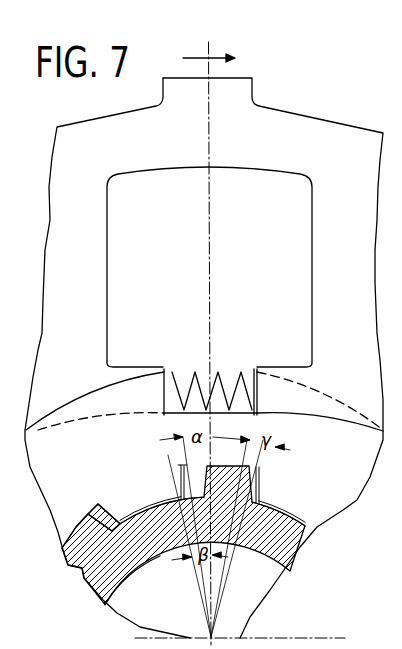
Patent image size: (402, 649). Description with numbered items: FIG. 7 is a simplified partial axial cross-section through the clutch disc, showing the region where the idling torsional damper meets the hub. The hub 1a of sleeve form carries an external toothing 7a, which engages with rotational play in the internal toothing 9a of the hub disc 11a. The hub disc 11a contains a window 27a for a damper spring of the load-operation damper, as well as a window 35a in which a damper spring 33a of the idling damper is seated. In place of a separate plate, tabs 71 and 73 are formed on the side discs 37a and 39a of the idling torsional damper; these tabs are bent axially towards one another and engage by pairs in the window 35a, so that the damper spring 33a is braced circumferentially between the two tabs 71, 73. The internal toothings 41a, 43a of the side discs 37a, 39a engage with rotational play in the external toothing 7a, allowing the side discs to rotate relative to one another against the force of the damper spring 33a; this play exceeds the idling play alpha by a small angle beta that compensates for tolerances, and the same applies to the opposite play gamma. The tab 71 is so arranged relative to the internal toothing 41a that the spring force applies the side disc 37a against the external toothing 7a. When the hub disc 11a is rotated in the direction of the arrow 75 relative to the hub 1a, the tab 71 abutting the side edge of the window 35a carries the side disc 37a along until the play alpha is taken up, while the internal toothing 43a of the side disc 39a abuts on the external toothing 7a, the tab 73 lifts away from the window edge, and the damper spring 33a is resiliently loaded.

The arrow 75 is at (186, 57).
The hub disc 11a is at (320, 130).
The window 27a is at (313, 232).
The damper spring 33a is at (220, 372).
The tab 71 is at (171, 372).
The tab 73 is at (246, 372).
The side disc 37a is at (116, 393).
The side disc 39a is at (315, 388).
The window 35a is at (175, 416).
The hub 1a is at (293, 541).
The external toothing 7a is at (70, 534).
The internal toothing 9a is at (179, 466).
The internal toothing 41a is at (181, 484).
The internal toothing 43a is at (259, 488).